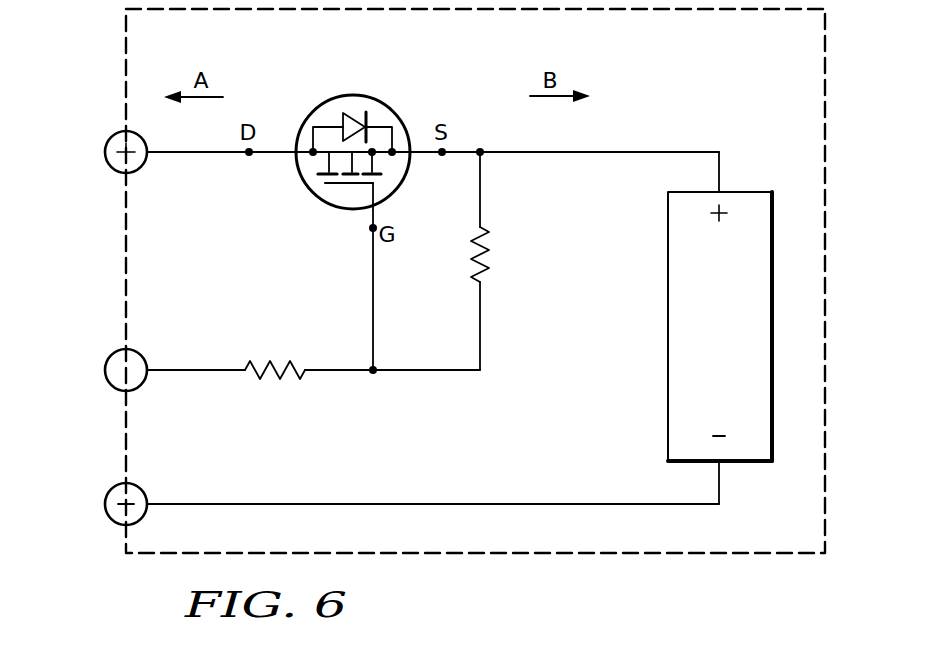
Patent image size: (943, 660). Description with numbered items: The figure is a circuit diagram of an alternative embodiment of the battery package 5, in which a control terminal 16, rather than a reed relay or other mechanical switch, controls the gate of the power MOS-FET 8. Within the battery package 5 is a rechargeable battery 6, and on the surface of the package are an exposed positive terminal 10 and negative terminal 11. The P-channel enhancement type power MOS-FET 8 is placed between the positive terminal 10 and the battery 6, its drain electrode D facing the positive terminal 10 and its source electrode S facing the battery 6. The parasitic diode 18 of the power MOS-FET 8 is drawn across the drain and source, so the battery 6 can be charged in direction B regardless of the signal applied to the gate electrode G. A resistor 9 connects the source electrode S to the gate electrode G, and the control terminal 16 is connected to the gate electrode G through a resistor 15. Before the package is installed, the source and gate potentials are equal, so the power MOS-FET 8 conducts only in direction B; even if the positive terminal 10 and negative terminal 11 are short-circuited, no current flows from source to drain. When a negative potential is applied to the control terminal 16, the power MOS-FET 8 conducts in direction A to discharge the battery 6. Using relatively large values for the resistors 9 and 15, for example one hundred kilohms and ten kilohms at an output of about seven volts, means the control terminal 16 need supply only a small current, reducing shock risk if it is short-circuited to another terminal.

The battery package 5 is at (826, 124).
The battery 6 is at (681, 338).
The power MOS-FET 8 is at (374, 127).
The resistor 9 is at (488, 250).
The positive terminal 10 is at (106, 150).
The negative terminal 11 is at (106, 502).
The resistor 15 is at (270, 362).
The control terminal 16 is at (106, 368).
The diode 18 is at (351, 117).